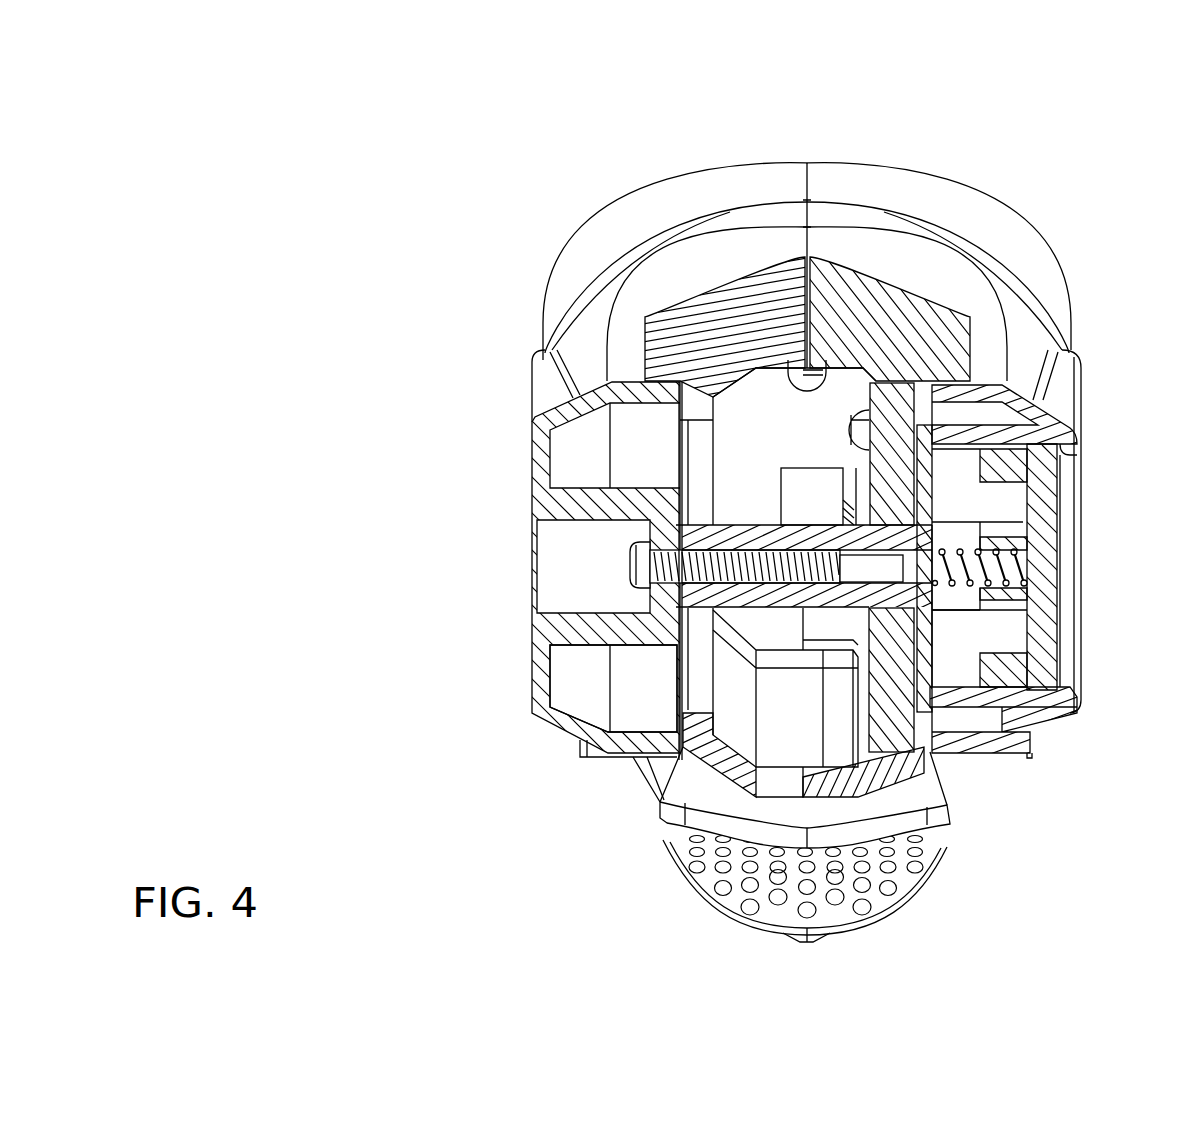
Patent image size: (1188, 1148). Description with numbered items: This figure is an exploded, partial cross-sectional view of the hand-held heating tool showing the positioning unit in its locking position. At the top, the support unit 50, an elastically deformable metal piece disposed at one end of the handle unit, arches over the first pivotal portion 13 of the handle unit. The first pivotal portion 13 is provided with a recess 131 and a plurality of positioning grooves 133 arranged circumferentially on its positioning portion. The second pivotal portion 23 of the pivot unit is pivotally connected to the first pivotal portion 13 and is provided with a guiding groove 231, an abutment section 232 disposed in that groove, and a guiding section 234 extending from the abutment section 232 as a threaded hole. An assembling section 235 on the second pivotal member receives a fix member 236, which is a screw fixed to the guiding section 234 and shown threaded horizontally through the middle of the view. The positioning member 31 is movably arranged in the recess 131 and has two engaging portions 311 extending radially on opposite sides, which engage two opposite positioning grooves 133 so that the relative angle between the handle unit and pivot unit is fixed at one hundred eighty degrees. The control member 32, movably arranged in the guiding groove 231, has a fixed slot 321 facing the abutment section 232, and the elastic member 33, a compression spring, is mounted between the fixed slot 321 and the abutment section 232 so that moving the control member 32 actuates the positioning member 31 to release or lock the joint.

The support unit 50 is at (686, 145).
The first pivotal portion 13 is at (851, 493).
The recess 131 is at (790, 372).
The positioning grooves 133 is at (918, 392).
The engaging portions 311 is at (868, 383).
The second pivotal portion 23 is at (811, 475).
The guiding groove 231 is at (1077, 450).
The abutment section 232 is at (940, 500).
The guiding section 234 is at (704, 603).
The assembling section 235 is at (632, 537).
The fix member 236 is at (632, 580).
The fixed slot 321 is at (1020, 557).
The control member 32 is at (1037, 578).
The elastic member 33 is at (985, 612).
The positioning member 31 is at (900, 680).